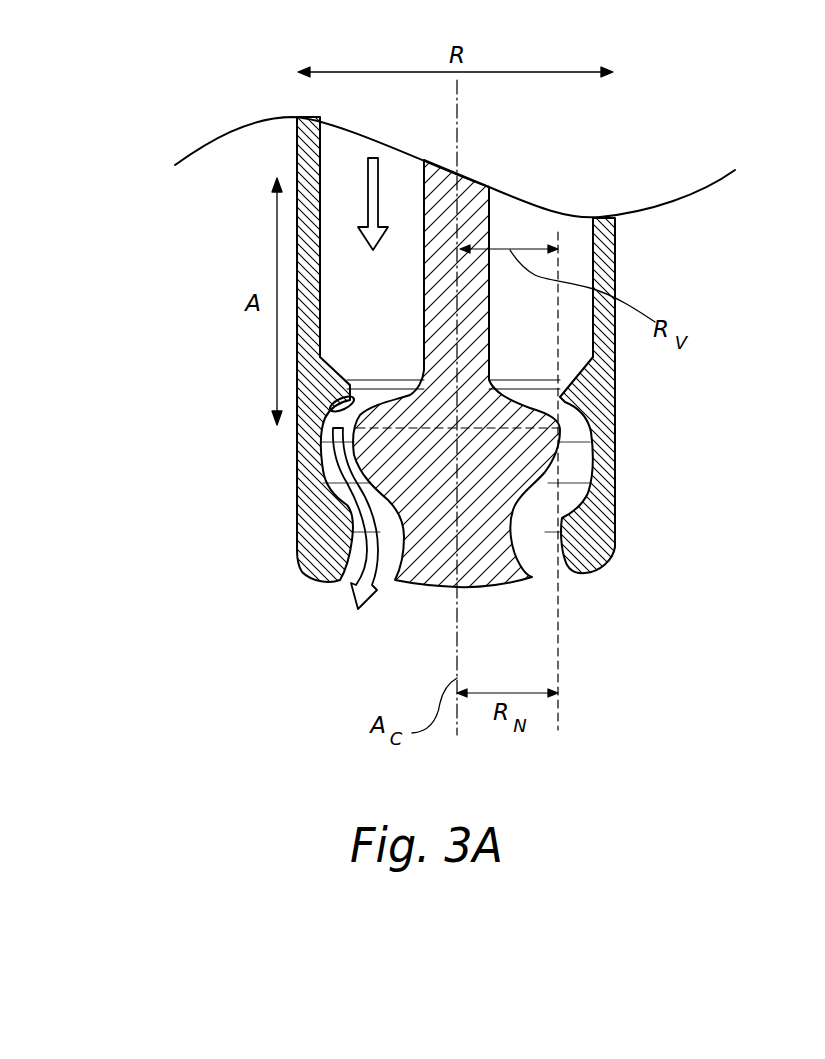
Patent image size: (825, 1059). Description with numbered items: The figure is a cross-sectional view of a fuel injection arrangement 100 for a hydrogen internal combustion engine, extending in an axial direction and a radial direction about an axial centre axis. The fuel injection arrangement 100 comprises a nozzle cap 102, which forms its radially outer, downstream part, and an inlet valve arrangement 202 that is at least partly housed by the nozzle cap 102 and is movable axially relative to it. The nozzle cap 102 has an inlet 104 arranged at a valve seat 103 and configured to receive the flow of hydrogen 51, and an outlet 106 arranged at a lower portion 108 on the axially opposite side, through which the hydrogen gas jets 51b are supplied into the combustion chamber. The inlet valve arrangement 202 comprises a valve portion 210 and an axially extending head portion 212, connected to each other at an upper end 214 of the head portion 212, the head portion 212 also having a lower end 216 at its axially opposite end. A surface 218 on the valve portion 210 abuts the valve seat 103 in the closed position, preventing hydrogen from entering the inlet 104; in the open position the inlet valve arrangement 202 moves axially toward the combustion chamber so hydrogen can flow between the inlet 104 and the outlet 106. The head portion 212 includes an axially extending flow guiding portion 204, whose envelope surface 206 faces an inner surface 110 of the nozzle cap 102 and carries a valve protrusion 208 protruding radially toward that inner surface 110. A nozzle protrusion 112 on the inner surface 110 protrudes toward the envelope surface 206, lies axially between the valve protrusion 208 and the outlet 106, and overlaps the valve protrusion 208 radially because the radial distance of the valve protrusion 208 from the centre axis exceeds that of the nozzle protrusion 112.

The flow of hydrogen 51 is at (363, 200).
The hydrogen gas jets 51b is at (350, 588).
The fuel injection arrangement 100 is at (227, 257).
The nozzle cap 102 is at (352, 520).
The valve seat 103 is at (352, 380).
The inlet 104 is at (323, 403).
The outlet 106 is at (545, 576).
The lower portion 108 is at (318, 566).
The inner surface 110 is at (330, 455).
The nozzle protrusion 112 is at (297, 544).
The inlet valve arrangement 202 is at (483, 213).
The flow guiding portion 204 is at (563, 517).
The envelope surface 206 is at (357, 402).
The valve protrusion 208 is at (542, 440).
The valve portion 210 is at (362, 412).
The head portion 212 is at (395, 592).
The upper end 214 is at (337, 490).
The lower end 216 is at (447, 588).
The surface 218 is at (530, 410).